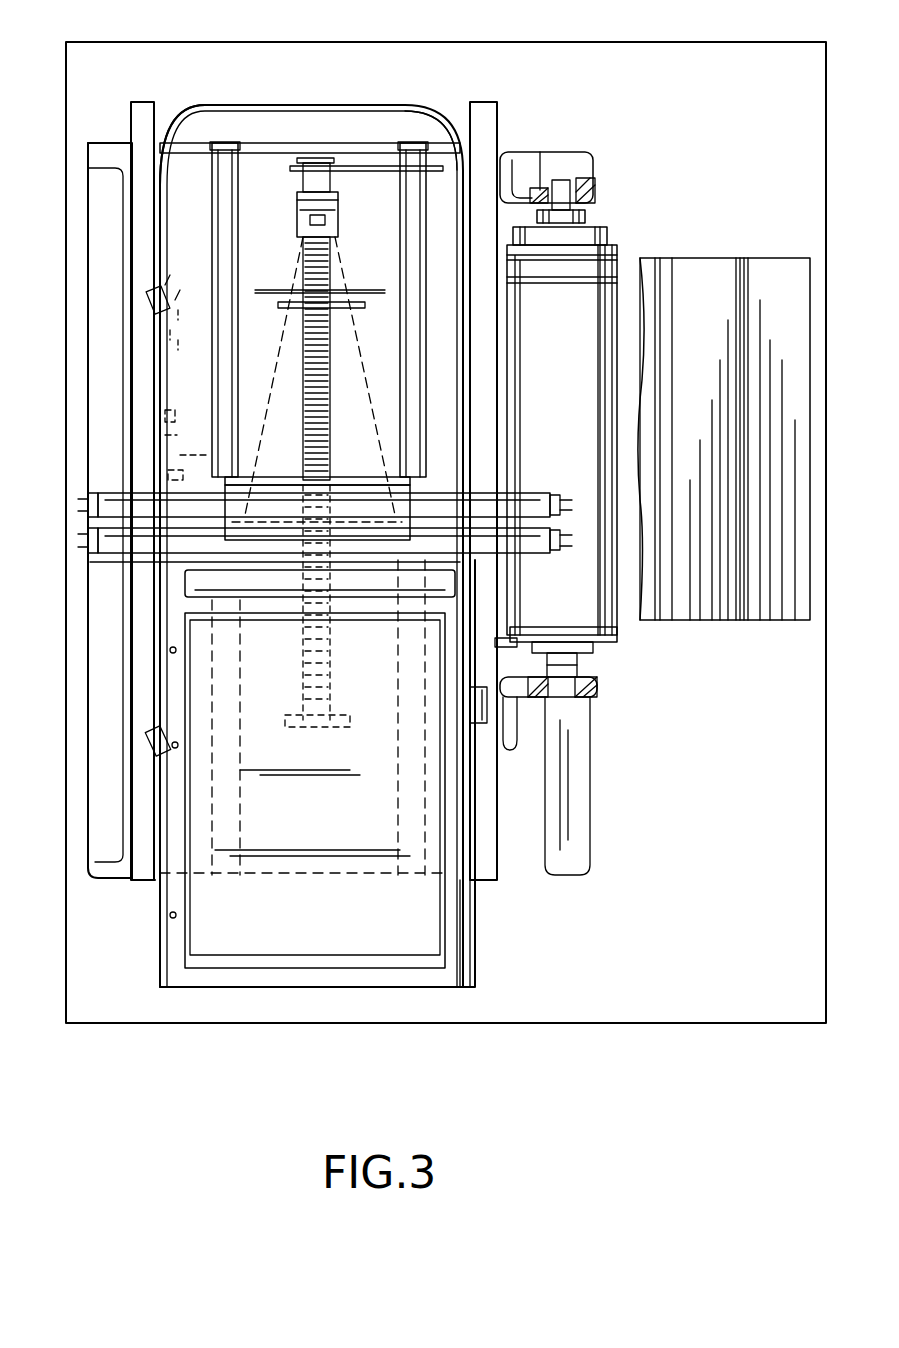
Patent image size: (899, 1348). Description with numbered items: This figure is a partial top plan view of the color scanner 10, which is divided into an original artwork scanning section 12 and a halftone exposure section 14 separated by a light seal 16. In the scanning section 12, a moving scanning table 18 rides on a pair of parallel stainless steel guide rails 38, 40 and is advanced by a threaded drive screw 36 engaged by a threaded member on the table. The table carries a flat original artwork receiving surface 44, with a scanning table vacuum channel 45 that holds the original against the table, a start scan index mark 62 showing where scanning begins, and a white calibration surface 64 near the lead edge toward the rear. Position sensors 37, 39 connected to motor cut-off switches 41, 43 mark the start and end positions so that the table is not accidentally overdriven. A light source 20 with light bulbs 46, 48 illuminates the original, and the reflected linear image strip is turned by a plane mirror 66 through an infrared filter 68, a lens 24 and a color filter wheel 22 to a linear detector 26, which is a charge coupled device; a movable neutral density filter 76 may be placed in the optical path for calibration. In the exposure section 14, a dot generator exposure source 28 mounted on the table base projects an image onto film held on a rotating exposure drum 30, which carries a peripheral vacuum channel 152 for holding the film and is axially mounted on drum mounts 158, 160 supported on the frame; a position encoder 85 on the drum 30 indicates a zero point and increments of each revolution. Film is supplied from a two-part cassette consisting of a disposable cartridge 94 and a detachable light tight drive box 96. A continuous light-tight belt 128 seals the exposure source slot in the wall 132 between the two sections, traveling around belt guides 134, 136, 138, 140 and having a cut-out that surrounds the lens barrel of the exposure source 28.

The color scanner 10 is at (52, 495).
The original artwork scanning section 12 is at (192, 68).
The halftone exposure section 14 is at (582, 145).
The light seal 16 is at (518, 118).
The scanning table 18 is at (493, 920).
The light source 20 is at (592, 515).
The color filter wheel 22 is at (440, 172).
The lens 24 is at (340, 224).
The linear detector 26 is at (328, 158).
The dot generator exposure source 28 is at (492, 715).
The rotating exposure drum 30 is at (618, 268).
The threaded drive screw 36 is at (332, 432).
The position sensor 37 is at (170, 750).
The scanning table guide rail 38 is at (215, 192).
The position sensor 39 is at (170, 285).
The scanning table guide rail 40 is at (418, 212).
The motor cut-off switch 41 is at (150, 740).
The motor cut-off switch 43 is at (150, 300).
The original artwork receiving surface 44 is at (330, 922).
The scanning table vacuum channel 45 is at (170, 900).
The light bulb 46 is at (540, 492).
The light bulb 48 is at (538, 552).
The start scan index mark 62 is at (172, 615).
The white calibration surface 64 is at (190, 582).
The plane mirror 66 is at (412, 484).
The infrared filter 68 is at (348, 308).
The movable neutral density filter 76 is at (383, 290).
The position encoder 85 is at (522, 650).
The disposable cartridge 94 is at (752, 615).
The detachable light tight drive box 96 is at (660, 622).
The continuous light-tight belt 128 is at (376, 105).
The wall 132 is at (475, 112).
The belt guide 134 is at (418, 108).
The belt guide 136 is at (205, 108).
The belt guide 138 is at (150, 932).
The belt guide 140 is at (466, 925).
The peripheral vacuum channel 152 is at (608, 332).
The drum mount 158 is at (600, 686).
The drum mount 160 is at (598, 200).